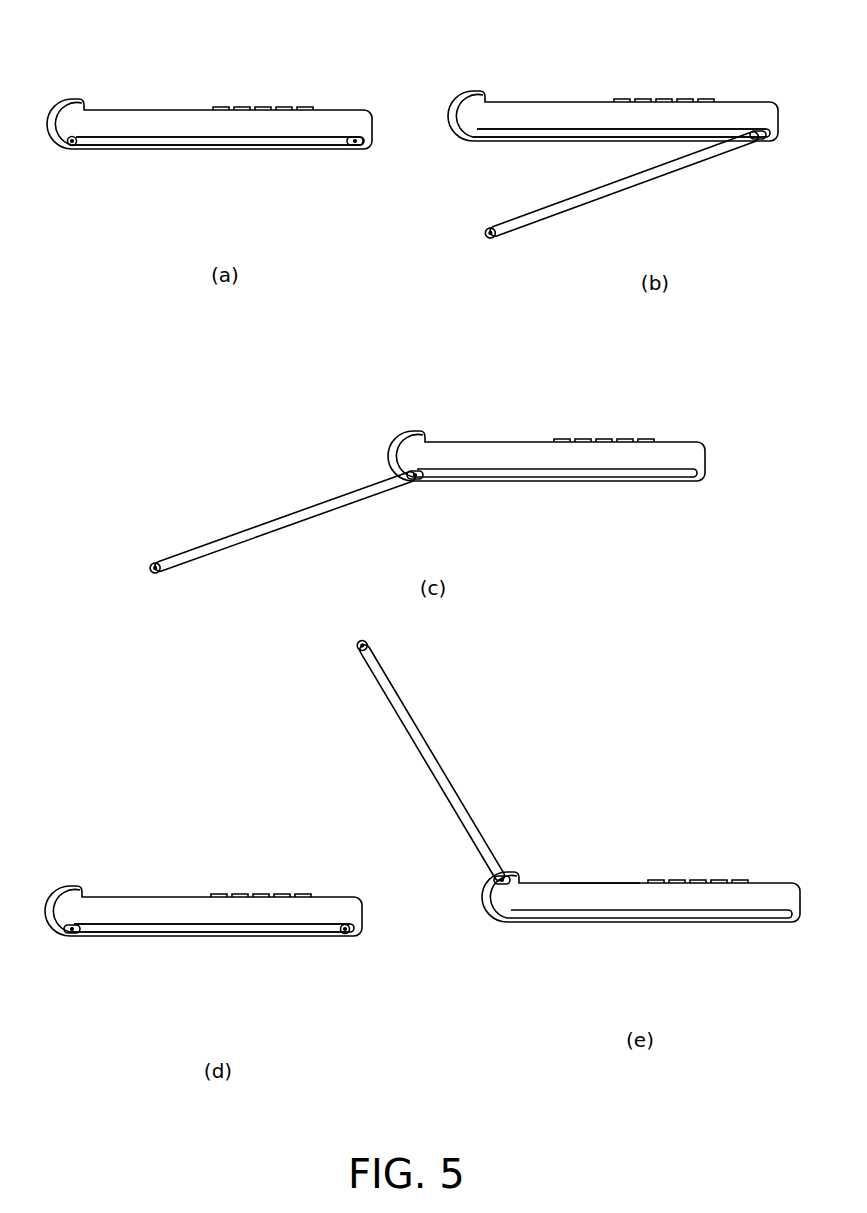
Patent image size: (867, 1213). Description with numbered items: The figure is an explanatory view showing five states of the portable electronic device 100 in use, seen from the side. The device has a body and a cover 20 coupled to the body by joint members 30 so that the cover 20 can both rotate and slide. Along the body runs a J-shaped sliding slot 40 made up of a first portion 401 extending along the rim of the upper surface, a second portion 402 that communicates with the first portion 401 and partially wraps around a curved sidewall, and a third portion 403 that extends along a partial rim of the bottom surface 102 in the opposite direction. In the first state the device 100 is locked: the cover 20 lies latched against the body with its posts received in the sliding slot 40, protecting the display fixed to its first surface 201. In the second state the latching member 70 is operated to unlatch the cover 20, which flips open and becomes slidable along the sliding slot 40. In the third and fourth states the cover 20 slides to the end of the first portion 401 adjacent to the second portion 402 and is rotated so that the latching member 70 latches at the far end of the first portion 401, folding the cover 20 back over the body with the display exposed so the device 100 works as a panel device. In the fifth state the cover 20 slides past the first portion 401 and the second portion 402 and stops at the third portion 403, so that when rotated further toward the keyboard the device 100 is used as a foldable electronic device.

The portable electronic device 100 is at (220, 57).
The latching member 70 is at (77, 146).
The joint member 30 is at (352, 148).
The first portion 401 is at (217, 142).
The J-shaped sliding slot 40 is at (600, 137).
The cover 20 is at (687, 162).
The first surface 201 is at (273, 520).
The second portion 402 is at (420, 482).
The third portion 403 is at (501, 886).
The bottom surface 102 is at (578, 882).